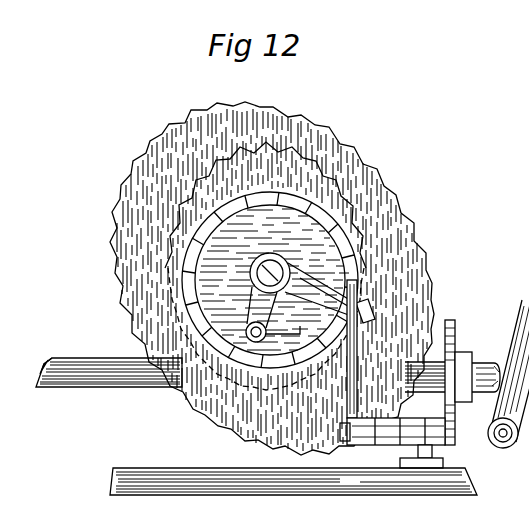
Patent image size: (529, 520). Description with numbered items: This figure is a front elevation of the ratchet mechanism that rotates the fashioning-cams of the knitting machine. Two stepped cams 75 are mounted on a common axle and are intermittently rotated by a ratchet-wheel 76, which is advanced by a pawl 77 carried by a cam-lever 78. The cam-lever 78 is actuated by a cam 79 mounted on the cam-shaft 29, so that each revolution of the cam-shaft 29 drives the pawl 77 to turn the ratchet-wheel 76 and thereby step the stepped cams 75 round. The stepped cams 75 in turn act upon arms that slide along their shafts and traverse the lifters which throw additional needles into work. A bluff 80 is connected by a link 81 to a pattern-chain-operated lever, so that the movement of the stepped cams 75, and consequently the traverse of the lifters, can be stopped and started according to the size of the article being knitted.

The cam-shaft 29 is at (240, 380).
The stepped cam 75 is at (170, 134).
The ratchet-wheel 76 is at (212, 232).
The pawl 77 is at (346, 392).
The cam-lever 78 is at (403, 415).
The cam 79 is at (456, 333).
The bluff 80 is at (371, 321).
The link 81 is at (275, 297).